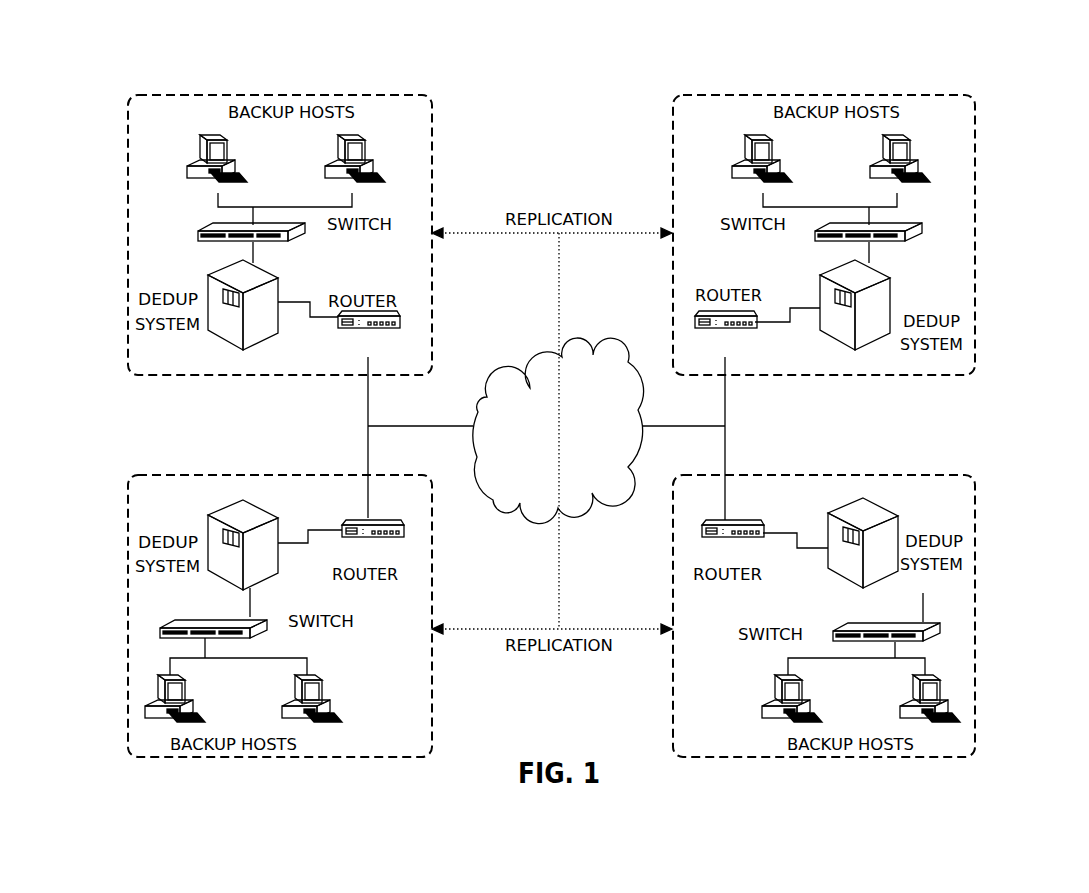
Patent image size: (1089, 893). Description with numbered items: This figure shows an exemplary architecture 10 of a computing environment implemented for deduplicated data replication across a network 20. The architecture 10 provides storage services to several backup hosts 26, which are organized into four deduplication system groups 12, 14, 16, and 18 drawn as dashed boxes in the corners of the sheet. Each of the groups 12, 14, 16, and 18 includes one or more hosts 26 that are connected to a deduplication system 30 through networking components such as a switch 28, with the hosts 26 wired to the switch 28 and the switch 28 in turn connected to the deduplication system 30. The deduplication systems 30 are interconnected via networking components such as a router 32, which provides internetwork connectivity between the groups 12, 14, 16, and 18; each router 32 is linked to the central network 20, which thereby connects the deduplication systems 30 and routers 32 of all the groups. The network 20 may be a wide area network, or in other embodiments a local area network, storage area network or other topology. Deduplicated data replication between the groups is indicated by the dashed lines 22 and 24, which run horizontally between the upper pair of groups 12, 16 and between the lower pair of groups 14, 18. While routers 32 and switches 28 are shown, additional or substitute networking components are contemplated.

The architecture 10 is at (1014, 57).
The deduplication system group 12 is at (432, 117).
The deduplication system group 14 is at (432, 542).
The deduplication system group 16 is at (977, 115).
The deduplication system group 18 is at (977, 497).
The network 20 is at (577, 337).
The dashed line 22 is at (465, 233).
The dashed line 24 is at (572, 629).
The backup host 26 is at (228, 151).
The switch 28 is at (300, 238).
The deduplication system 30 is at (208, 281).
The router 32 is at (348, 328).